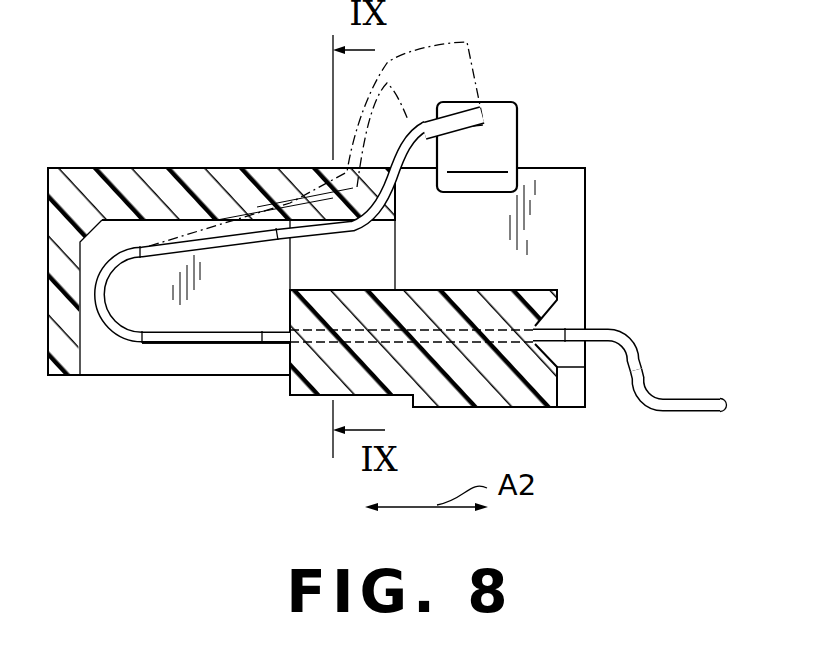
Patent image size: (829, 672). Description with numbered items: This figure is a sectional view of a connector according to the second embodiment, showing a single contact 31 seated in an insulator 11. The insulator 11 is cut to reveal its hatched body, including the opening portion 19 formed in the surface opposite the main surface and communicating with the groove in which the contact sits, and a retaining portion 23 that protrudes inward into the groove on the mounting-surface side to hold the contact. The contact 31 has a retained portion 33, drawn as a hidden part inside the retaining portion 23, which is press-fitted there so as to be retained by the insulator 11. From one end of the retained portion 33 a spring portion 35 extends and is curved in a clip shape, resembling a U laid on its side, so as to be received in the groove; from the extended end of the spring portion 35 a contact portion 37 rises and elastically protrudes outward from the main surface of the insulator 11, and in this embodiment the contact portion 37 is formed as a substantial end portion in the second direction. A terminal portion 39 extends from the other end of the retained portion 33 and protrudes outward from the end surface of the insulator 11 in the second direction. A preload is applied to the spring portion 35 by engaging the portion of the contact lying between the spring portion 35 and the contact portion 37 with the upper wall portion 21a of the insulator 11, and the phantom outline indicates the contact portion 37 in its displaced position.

The insulator 11 is at (225, 168).
The opening portion 19 is at (212, 362).
The upper wall portion 21a is at (142, 168).
The retaining portion 23 is at (545, 404).
The contact 31 is at (621, 327).
The retained portion 33 is at (461, 343).
The spring portion 35 is at (150, 343).
The contact portion 37 is at (477, 61).
The terminal portion 39 is at (668, 395).